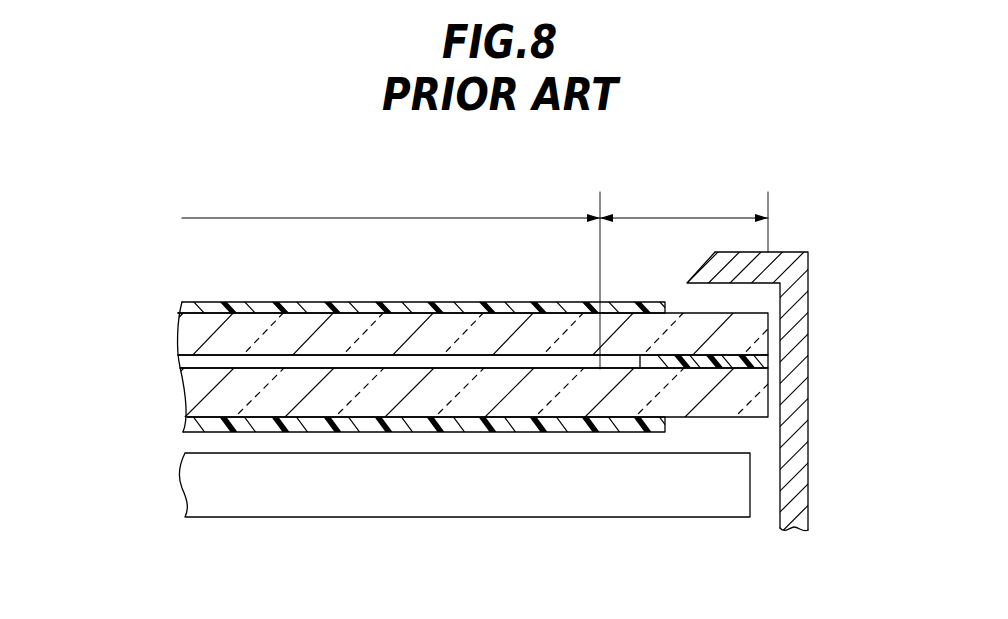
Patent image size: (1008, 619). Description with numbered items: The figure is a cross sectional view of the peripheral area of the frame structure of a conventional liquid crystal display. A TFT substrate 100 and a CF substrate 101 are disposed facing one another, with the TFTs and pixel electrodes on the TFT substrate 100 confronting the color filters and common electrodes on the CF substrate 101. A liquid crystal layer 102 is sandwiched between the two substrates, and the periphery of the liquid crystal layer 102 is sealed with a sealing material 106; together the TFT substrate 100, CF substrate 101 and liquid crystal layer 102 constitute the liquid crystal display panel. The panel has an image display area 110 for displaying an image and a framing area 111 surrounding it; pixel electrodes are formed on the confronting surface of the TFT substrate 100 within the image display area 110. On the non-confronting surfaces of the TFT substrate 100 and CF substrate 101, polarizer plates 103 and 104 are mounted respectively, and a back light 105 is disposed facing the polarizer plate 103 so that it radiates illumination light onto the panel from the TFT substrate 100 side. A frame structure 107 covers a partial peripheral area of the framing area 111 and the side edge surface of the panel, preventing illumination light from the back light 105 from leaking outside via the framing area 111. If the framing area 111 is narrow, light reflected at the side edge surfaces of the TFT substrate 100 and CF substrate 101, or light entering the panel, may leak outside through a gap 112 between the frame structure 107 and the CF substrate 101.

The TFT substrate 100 is at (185, 397).
The CF substrate 101 is at (178, 330).
The liquid crystal layer 102 is at (183, 367).
The polarizer plate 103 is at (177, 423).
The polarizer plate 104 is at (178, 312).
The back light 105 is at (183, 477).
The sealing material 106 is at (684, 368).
The frame structure 107 is at (808, 382).
The image display area 110 is at (390, 217).
The framing area 111 is at (690, 213).
The gap 112 is at (680, 298).